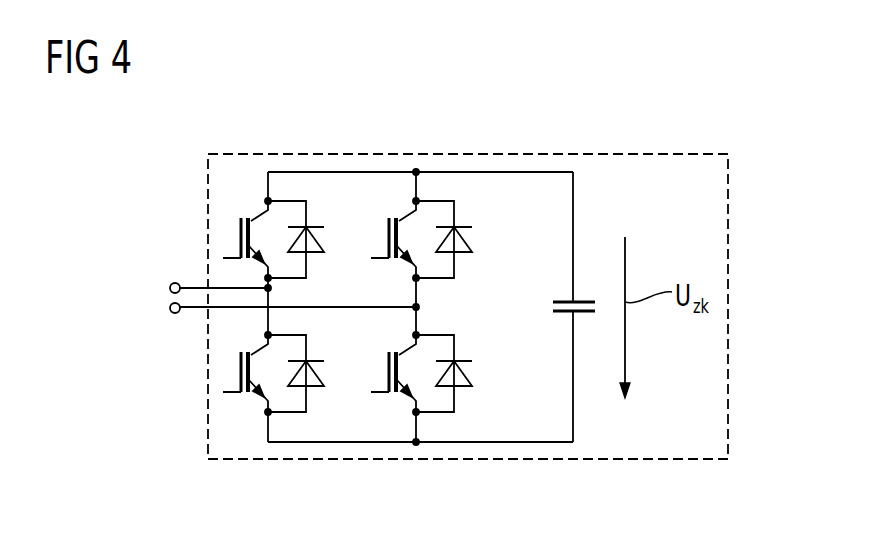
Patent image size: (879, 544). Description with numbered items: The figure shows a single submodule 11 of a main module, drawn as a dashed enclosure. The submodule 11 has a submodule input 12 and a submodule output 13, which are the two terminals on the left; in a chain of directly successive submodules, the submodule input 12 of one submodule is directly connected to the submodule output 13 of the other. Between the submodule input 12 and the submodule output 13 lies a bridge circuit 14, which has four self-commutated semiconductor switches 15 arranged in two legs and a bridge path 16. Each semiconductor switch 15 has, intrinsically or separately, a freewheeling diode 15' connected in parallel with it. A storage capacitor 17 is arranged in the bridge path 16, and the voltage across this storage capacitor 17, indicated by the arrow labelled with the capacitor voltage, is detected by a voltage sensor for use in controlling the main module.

The submodule 11 is at (728, 333).
The submodule input 12 is at (170, 288).
The submodule output 13 is at (170, 308).
The bridge circuit 14 is at (518, 118).
The semiconductor switch 15 is at (312, 311).
The freewheeling diode 15' is at (372, 311).
The bridge path 16 is at (573, 205).
The storage capacitor 17 is at (560, 313).